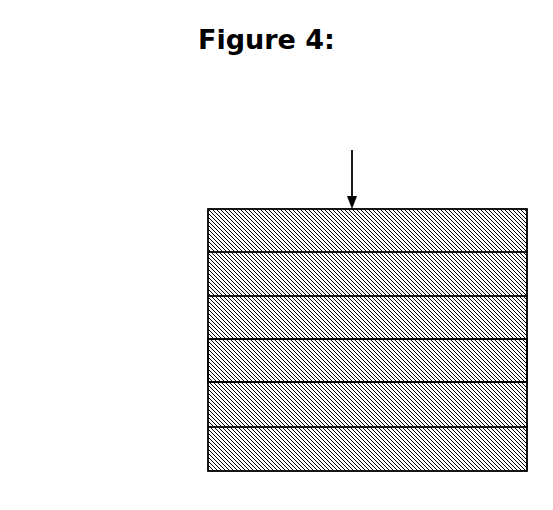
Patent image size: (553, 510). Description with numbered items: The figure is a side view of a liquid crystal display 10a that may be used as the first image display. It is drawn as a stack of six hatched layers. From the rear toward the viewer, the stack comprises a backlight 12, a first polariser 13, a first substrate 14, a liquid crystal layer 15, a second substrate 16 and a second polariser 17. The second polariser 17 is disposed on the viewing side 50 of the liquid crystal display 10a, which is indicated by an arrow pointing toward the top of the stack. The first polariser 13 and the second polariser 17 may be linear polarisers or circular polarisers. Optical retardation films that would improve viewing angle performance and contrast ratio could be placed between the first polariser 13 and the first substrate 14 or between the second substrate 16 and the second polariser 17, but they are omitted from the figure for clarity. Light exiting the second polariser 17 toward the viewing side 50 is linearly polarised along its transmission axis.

The liquid crystal display 10a is at (132, 184).
The backlight 12 is at (240, 449).
The first polariser 13 is at (240, 408).
The first substrate 14 is at (240, 358).
The liquid crystal layer 15 is at (240, 316).
The second substrate 16 is at (240, 278).
The second polariser 17 is at (240, 234).
The viewing side 50 is at (354, 166).